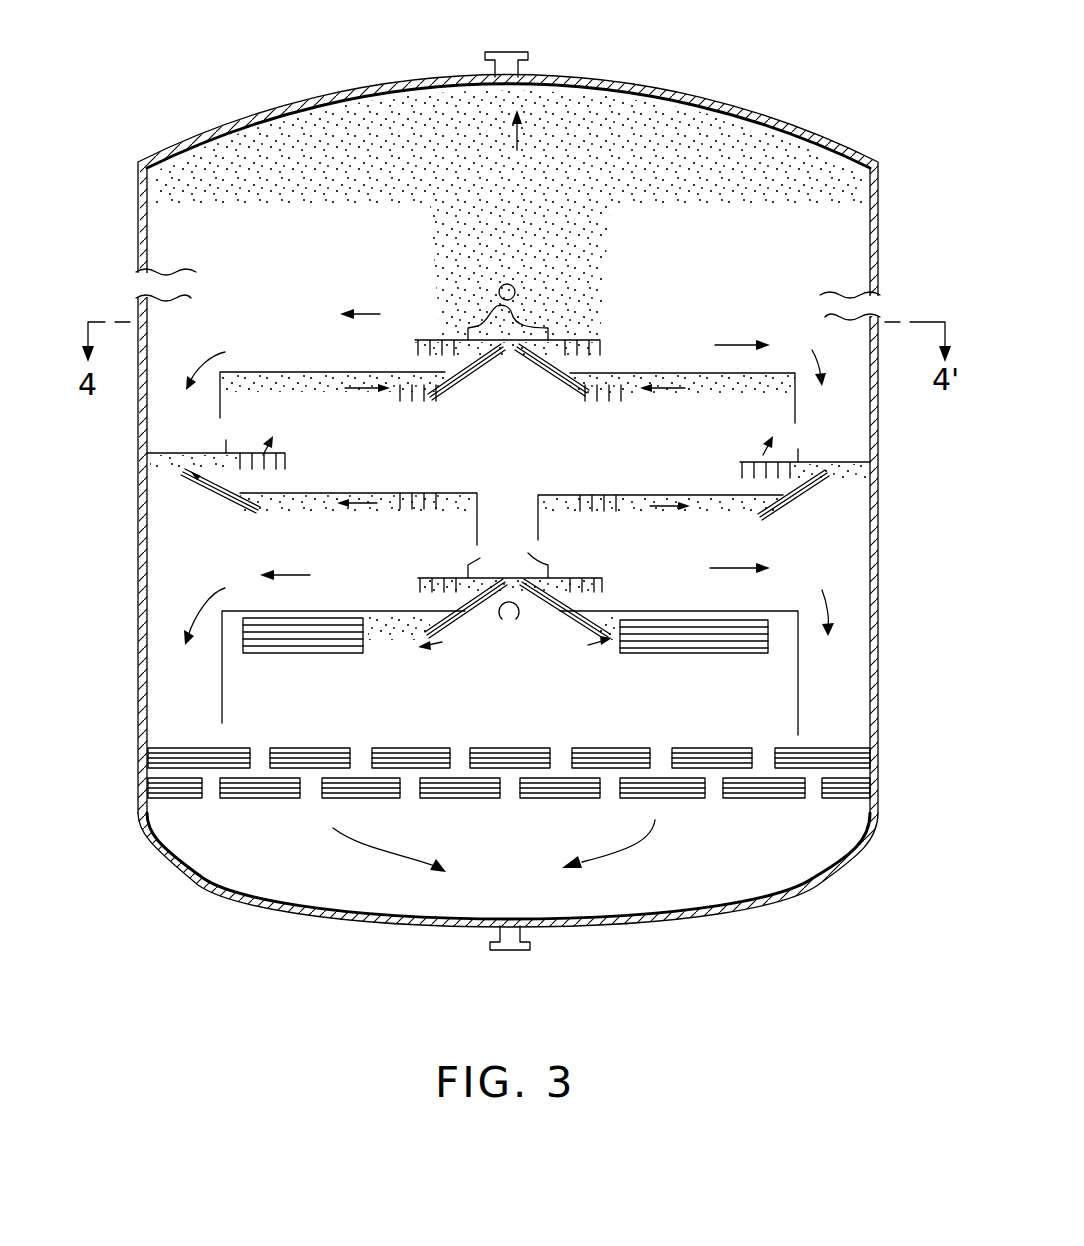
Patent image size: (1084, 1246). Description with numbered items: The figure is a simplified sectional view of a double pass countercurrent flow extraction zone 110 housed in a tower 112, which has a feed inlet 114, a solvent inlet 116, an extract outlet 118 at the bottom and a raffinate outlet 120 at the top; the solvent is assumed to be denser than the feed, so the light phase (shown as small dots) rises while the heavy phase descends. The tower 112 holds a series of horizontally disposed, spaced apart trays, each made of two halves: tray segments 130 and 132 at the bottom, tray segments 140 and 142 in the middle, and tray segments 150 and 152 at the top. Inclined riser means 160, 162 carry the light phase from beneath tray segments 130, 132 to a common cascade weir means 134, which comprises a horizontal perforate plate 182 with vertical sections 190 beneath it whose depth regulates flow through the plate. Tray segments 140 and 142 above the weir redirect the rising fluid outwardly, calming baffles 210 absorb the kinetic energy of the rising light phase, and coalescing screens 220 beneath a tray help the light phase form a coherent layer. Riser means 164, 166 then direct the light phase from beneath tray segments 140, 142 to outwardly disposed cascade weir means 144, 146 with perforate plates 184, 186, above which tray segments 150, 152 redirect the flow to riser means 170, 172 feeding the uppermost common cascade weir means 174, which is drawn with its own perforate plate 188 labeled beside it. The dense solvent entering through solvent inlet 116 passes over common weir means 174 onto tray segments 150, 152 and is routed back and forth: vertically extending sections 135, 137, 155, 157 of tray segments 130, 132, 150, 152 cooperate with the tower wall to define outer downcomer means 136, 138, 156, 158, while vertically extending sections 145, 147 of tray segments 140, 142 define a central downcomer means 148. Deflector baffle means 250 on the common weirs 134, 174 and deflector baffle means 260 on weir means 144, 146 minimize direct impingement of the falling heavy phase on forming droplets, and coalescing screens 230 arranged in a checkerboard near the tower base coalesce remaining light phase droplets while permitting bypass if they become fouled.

The double pass countercurrent flow extraction zone 110 is at (551, 500).
The tower 112 is at (880, 520).
The feed inlet 114 is at (509, 622).
The solvent inlet 116 is at (513, 285).
The extract outlet 118 is at (495, 940).
The raffinate outlet 120 is at (522, 55).
The tray segment 130 is at (680, 610).
The tray segment 132 is at (368, 611).
The common cascade weir means 134 is at (528, 577).
The vertically extending section 135 is at (798, 668).
The downcomer means 136 is at (852, 633).
The vertically extending section 137 is at (222, 706).
The downcomer means 138 is at (195, 655).
The tray segment 140 is at (650, 495).
The tray segment 142 is at (392, 493).
The cascade weir means 144 is at (845, 444).
The vertically extending section 145 is at (530, 490).
The cascade weir means 146 is at (315, 436).
The vertically extending section 147 is at (505, 535).
The downcomer means 148 is at (503, 532).
The tray segment 150 is at (640, 373).
The tray segment 152 is at (320, 372).
The vertically extending section 155 is at (795, 385).
The downcomer means 156 is at (852, 364).
The vertically extending section 157 is at (220, 422).
The downcomer means 158 is at (177, 395).
The inclined riser means 160 is at (580, 635).
The inclined riser means 162 is at (452, 636).
The riser means 164 is at (792, 503).
The riser means 166 is at (228, 516).
The riser means 170 is at (553, 383).
The riser means 172 is at (455, 383).
The common cascade weir means 174 is at (610, 315).
The perforate plate 182 is at (592, 579).
The perforate plate 184 is at (745, 462).
The perforate plate 186 is at (251, 423).
The perforated deck 188 is at (585, 347).
The vertical sections 190 is at (572, 593).
The calming baffles 210 is at (410, 514).
The coalescing screens 220 is at (312, 655).
The coalescing screens 230 is at (440, 803).
The deflector baffle means 250 is at (490, 319).
The deflector baffle means 260 is at (798, 455).